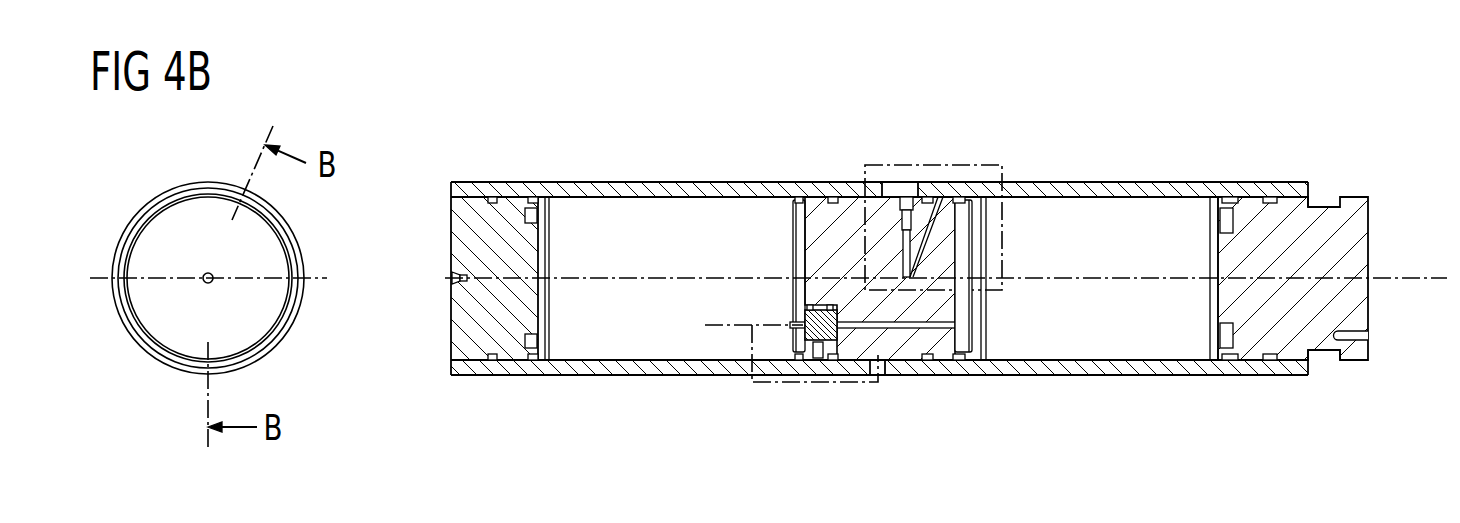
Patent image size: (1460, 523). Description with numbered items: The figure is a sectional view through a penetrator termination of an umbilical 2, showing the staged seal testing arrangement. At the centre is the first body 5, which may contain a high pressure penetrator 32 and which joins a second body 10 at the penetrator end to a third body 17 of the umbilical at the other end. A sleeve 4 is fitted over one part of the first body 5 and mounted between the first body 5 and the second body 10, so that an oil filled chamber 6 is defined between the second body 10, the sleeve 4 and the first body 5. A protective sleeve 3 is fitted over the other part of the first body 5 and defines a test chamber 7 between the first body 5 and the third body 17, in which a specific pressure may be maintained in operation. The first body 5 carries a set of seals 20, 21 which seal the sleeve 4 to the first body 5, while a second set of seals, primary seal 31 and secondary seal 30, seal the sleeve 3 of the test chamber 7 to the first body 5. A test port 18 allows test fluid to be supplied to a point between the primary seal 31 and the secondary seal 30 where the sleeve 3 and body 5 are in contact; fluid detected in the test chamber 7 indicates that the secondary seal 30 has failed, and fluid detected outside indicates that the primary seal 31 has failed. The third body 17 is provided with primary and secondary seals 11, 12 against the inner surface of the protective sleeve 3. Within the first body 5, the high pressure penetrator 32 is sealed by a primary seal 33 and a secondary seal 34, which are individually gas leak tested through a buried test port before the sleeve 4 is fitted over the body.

The umbilical 2 is at (1328, 352).
The protective sleeve 3 is at (1108, 172).
The sleeve 4 is at (655, 170).
The first body 5 is at (879, 208).
The oil filled chamber 6 is at (662, 350).
The test chamber 7 is at (1040, 348).
The second body 10 is at (452, 316).
The primary seal 11 is at (1273, 197).
The secondary seal 12 is at (1228, 197).
The third body 17 is at (1360, 232).
The test port 18 is at (918, 174).
The seal 20 is at (835, 197).
The seal 21 is at (800, 197).
The secondary seal 30 is at (962, 362).
The primary seal 31 is at (922, 362).
The high pressure penetrator 32 is at (840, 338).
The primary seal 33 is at (808, 312).
The secondary seal 34 is at (827, 308).